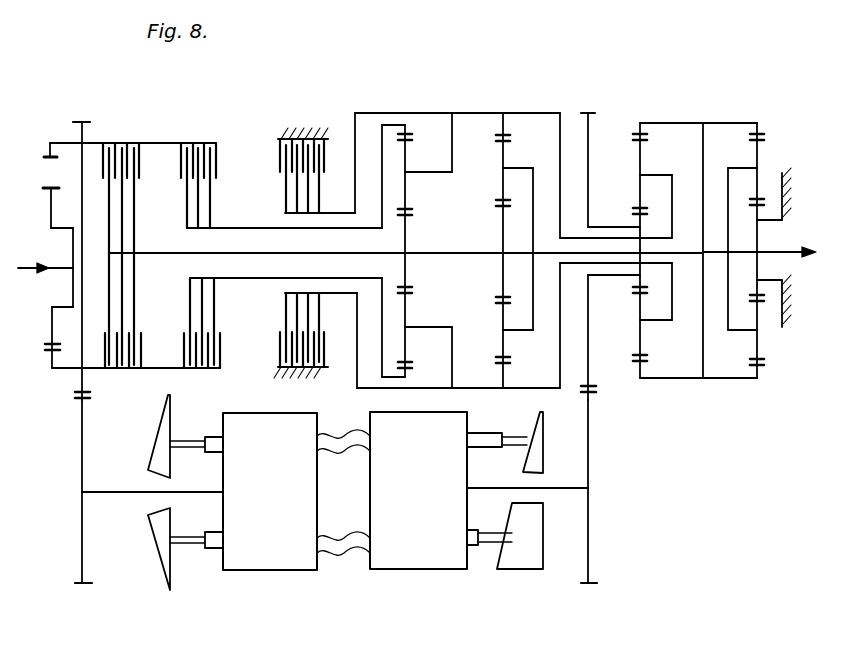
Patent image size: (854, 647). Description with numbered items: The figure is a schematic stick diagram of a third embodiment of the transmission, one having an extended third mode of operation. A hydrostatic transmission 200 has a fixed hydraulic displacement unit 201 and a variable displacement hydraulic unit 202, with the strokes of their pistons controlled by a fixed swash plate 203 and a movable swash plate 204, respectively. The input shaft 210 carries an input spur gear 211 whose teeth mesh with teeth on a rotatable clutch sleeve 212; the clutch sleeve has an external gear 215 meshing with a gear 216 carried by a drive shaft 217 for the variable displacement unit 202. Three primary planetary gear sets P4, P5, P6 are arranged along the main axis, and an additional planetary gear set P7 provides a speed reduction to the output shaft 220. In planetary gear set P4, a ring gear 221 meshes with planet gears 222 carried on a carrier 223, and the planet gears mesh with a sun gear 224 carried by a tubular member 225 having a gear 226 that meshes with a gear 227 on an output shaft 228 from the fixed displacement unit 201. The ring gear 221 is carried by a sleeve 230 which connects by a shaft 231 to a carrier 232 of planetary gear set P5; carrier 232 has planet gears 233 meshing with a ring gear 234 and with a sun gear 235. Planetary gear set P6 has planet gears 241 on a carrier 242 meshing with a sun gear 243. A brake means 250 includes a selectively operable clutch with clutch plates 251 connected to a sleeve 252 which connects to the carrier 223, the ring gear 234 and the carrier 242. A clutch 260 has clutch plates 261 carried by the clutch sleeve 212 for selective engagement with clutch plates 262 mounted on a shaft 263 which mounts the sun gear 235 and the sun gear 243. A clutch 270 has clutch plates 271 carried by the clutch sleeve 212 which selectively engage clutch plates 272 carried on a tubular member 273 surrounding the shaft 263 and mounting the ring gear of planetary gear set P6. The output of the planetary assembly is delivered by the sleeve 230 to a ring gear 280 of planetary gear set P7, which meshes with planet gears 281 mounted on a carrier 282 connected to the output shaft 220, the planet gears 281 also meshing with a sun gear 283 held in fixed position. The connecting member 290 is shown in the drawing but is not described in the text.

The hydrostatic transmission 200 is at (360, 588).
The fixed hydraulic displacement unit 201 is at (442, 543).
The variable displacement hydraulic unit 202 is at (296, 548).
The fixed swash plate 203 is at (527, 562).
The movable swash plate 204 is at (172, 568).
The input shaft 210 is at (60, 273).
The input spur gear 211 is at (50, 210).
The clutch sleeve 212 is at (60, 372).
The external gear 215 is at (84, 381).
The gear 216 is at (83, 512).
The drive shaft 217 is at (108, 497).
The output shaft 220 is at (790, 248).
The ring gear 221 is at (637, 130).
The planet gears 222 is at (637, 185).
The carrier 223 is at (684, 166).
The sun gear 224 is at (637, 283).
The tubular member 225 is at (636, 356).
The gear 226 is at (588, 133).
The gear 227 is at (590, 463).
The output shaft 228 is at (577, 490).
The sleeve 230 is at (703, 379).
The shaft 231 is at (697, 256).
The carrier 232 is at (541, 181).
The planet gears 233 is at (498, 153).
The ring gear 234 is at (505, 128).
The sun gear 235 is at (503, 275).
The planet gears 241 is at (408, 172).
The carrier 242 is at (437, 178).
The sun gear 243 is at (408, 265).
The brake means 250 is at (288, 117).
The clutch plates 251 is at (319, 200).
The sleeve 252 is at (365, 113).
The clutch 260 is at (137, 224).
The clutch plates 261 is at (142, 162).
The clutch plates 262 is at (135, 228).
The shaft 263 is at (157, 257).
The clutch 270 is at (224, 221).
The clutch plates 271 is at (217, 160).
The clutch plates 272 is at (216, 203).
The tubular member 273 is at (240, 279).
The ring gear 280 is at (760, 124).
The planet gears 281 is at (760, 147).
The carrier 282 is at (750, 362).
The sun gear 283 is at (777, 273).
The connecting member 290 is at (400, 127).
The planetary gear set P4 is at (658, 242).
The planetary gear set P5 is at (458, 220).
The planetary gear set P6 is at (414, 224).
The planetary gear set P7 is at (757, 214).